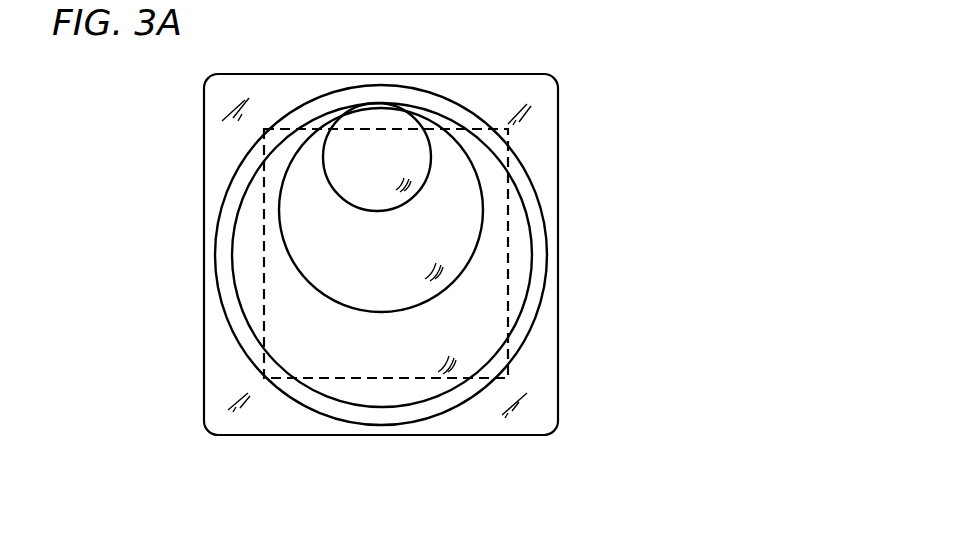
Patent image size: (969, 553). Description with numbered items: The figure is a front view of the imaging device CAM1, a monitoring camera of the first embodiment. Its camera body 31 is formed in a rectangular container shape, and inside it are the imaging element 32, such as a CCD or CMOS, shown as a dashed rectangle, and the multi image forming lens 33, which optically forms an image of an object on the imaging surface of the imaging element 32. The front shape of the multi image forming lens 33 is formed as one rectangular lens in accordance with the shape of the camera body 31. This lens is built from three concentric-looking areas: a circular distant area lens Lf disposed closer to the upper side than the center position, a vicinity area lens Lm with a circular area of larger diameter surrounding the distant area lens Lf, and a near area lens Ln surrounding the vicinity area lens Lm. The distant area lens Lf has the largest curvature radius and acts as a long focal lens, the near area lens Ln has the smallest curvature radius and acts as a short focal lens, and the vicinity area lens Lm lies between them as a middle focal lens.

The imaging device CAM1 is at (518, 73).
The camera body 31 is at (515, 436).
The imaging element 32 is at (264, 269).
The multi image forming lens 33 is at (513, 333).
The distant area lens Lf is at (375, 122).
The vicinity area lens Lm is at (432, 232).
The near area lens Ln is at (472, 323).